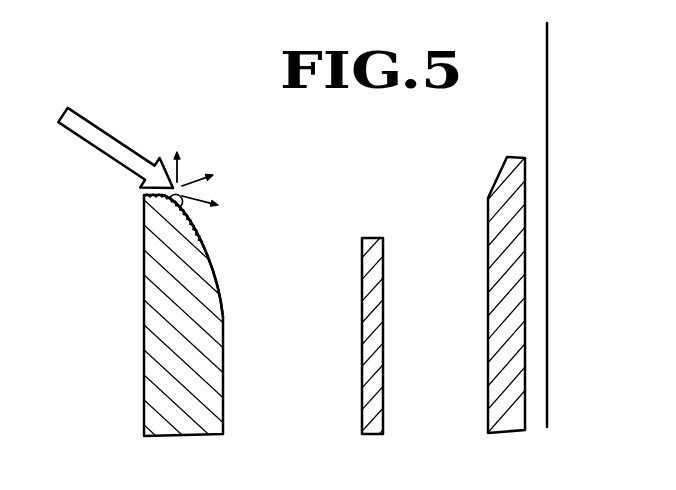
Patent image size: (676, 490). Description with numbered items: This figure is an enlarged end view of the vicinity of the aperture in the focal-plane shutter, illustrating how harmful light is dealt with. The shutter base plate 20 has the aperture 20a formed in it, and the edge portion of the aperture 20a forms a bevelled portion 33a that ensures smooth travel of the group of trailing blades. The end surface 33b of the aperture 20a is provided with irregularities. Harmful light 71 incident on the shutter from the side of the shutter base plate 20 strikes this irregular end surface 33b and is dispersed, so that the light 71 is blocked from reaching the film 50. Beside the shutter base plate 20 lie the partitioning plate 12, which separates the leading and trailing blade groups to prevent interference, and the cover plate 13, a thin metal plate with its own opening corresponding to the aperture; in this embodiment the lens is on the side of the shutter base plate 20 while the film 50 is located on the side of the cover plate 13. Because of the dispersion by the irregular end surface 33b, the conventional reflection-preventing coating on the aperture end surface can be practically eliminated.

The partitioning plate 12 is at (368, 277).
The cover plate 13 is at (497, 380).
The shutter base plate 20 is at (203, 397).
The aperture 20a is at (187, 170).
The bevelled portion 33a is at (214, 291).
The irregular end surface 33b is at (178, 198).
The film 50 is at (547, 313).
The harmful light 71 is at (104, 137).